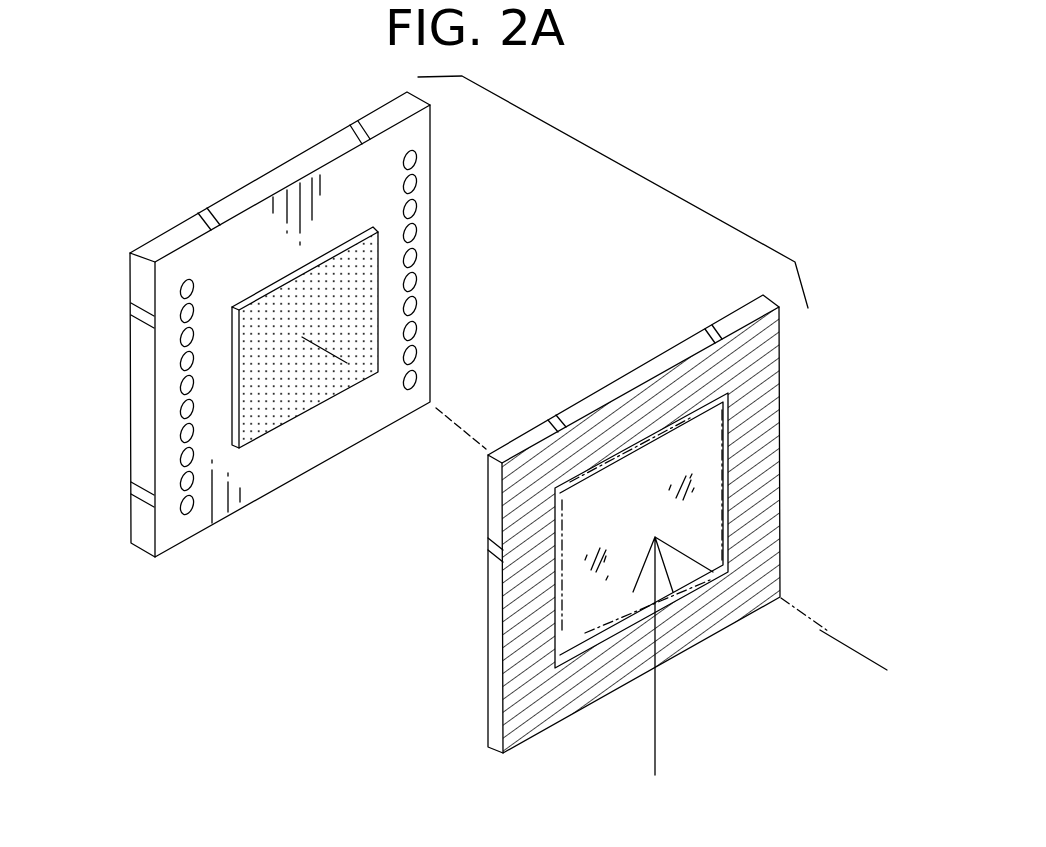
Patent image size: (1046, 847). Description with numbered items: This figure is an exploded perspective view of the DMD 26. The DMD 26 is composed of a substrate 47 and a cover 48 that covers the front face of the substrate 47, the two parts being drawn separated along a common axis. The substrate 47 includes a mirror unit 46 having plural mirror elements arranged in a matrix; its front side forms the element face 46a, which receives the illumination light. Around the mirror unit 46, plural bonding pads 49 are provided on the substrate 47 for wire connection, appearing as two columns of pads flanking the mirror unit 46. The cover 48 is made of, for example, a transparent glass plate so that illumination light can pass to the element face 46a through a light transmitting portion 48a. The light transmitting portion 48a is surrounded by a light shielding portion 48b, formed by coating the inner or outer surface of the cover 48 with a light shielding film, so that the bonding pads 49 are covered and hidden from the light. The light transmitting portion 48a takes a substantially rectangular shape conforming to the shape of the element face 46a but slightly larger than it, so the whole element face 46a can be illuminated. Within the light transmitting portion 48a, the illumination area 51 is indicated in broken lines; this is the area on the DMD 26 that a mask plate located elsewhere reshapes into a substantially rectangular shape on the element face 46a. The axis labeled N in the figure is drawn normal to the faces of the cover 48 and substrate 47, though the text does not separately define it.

The DMD 26 is at (608, 157).
The mirror unit 46 is at (295, 421).
The element face 46a is at (325, 380).
The substrate 47 is at (168, 550).
The cover 48 is at (647, 535).
The light transmitting portion 48a is at (697, 505).
The light shielding portion 48b is at (757, 360).
The bonding pads 49 is at (410, 280).
The illumination area 51 is at (560, 607).
The surface normal axis N is at (827, 633).